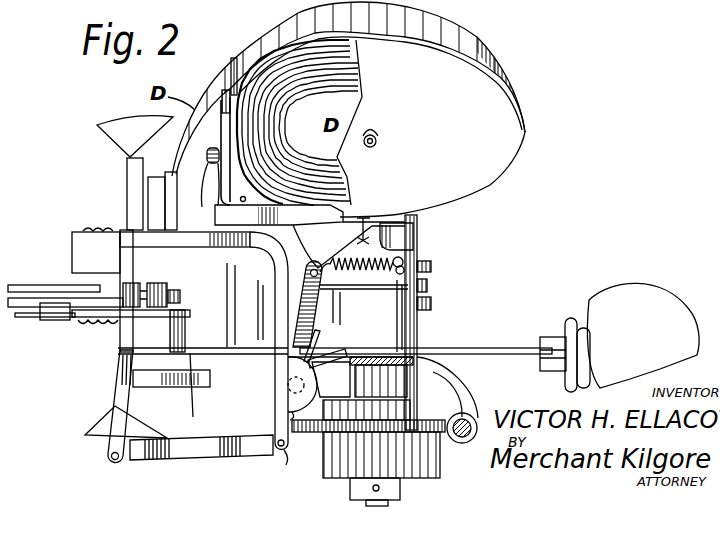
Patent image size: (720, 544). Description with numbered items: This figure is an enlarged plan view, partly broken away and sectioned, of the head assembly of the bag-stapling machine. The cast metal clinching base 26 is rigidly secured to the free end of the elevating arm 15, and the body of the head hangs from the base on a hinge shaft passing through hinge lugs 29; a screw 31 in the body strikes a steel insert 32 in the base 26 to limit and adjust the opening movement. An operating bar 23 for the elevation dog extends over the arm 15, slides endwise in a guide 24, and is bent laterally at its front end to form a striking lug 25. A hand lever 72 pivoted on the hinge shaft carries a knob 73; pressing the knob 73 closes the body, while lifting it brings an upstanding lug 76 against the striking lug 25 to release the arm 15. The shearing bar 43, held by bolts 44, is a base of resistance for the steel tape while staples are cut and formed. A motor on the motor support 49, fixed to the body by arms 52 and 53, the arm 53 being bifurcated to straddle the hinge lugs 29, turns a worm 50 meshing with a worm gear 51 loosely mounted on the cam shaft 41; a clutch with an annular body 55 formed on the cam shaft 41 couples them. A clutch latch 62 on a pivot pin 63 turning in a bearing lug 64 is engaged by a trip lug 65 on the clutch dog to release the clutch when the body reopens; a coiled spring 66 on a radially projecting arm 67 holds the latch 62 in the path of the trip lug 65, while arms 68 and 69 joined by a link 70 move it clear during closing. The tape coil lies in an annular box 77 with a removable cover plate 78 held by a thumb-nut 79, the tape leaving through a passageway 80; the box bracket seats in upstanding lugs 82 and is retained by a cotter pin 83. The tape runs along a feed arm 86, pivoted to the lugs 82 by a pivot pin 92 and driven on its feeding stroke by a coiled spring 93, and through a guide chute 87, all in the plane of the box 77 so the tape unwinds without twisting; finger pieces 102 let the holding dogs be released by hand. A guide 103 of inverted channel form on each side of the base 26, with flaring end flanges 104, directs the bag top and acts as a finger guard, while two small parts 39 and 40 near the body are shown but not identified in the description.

The elevating arm 15 is at (23, 288).
The operating bar 23 is at (25, 314).
The guide 24 is at (63, 320).
The striking lug 25 is at (182, 337).
The clinching base 26 is at (78, 247).
The hinge lugs 29 is at (133, 265).
The screw 31 is at (180, 297).
The steel insert 32 is at (147, 283).
The adjusting nut 39 is at (430, 267).
The collar 40 is at (428, 288).
The cam shaft 41 is at (390, 503).
The shearing bar 43 is at (157, 198).
The bolts 44 is at (208, 372).
The motor support 49 is at (280, 282).
The worm 50 is at (463, 437).
The worm gear 51 is at (440, 407).
The arm 52 is at (410, 357).
The arm 53 is at (130, 235).
The annular body 55 is at (375, 400).
The clutch latch 62 is at (318, 357).
The pivot pin 63 is at (286, 390).
The bearing lug 64 is at (312, 358).
The trip lug 65 is at (348, 384).
The coiled spring 66 is at (363, 272).
The arm 67 is at (300, 309).
The arm 68 is at (283, 452).
The arm 69 is at (127, 414).
The link 70 is at (197, 458).
The hand lever 72 is at (500, 350).
The knob 73 is at (634, 308).
The upstanding lug 76 is at (207, 394).
The annular box 77 is at (512, 82).
The cover plate 78 is at (510, 143).
The center screw stud and thumb-nut 79 is at (378, 141).
The passageway 80 is at (228, 98).
The upstanding lugs 82 is at (413, 242).
The cotter pin 83 is at (415, 222).
The feed arm 86 is at (257, 203).
The guide chute 87 is at (170, 173).
The pivot pin 92 is at (397, 275).
The coiled spring 93 is at (190, 220).
The finger pieces 102 is at (208, 160).
The guide 103 is at (133, 183).
The flaring flange arrangement 104 is at (117, 138).